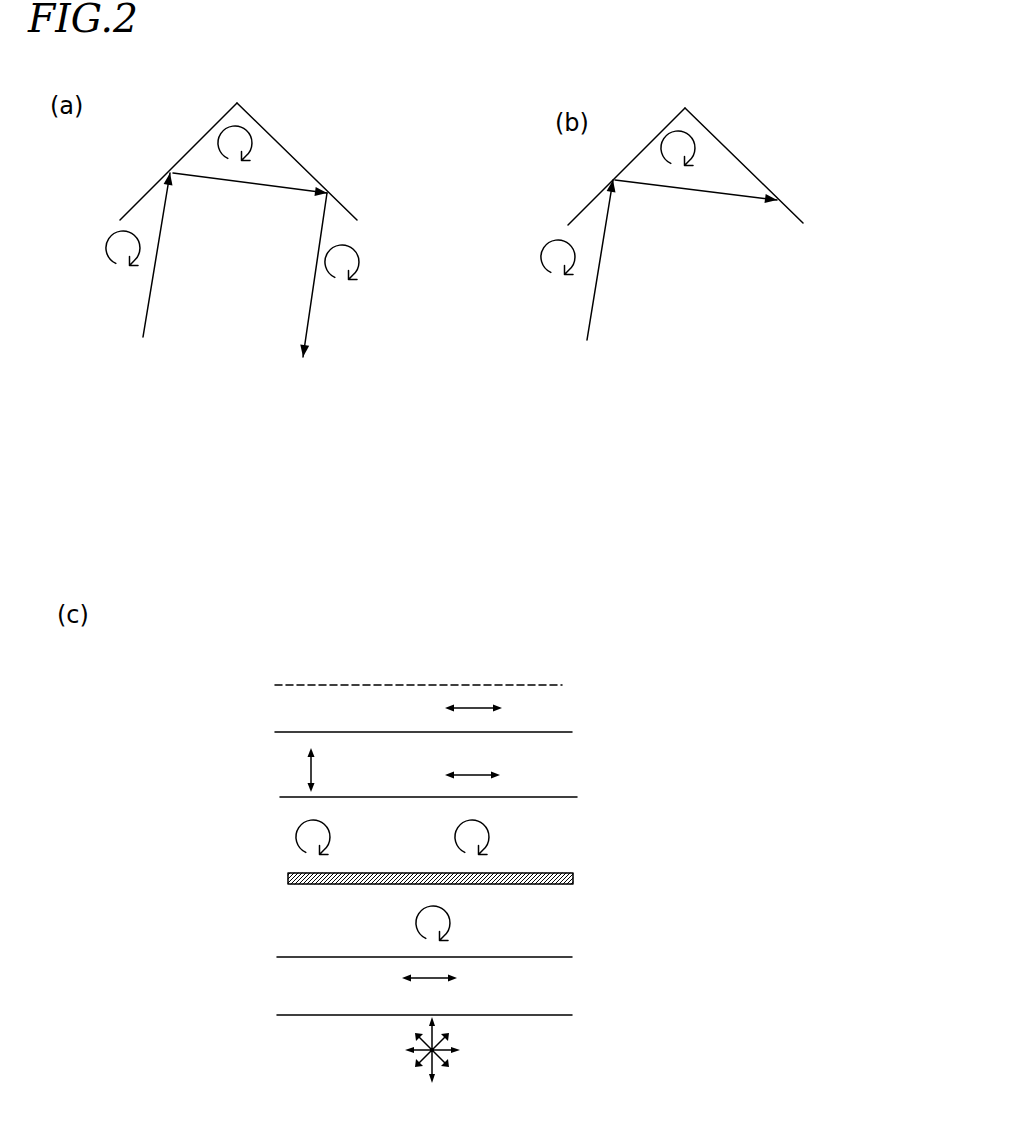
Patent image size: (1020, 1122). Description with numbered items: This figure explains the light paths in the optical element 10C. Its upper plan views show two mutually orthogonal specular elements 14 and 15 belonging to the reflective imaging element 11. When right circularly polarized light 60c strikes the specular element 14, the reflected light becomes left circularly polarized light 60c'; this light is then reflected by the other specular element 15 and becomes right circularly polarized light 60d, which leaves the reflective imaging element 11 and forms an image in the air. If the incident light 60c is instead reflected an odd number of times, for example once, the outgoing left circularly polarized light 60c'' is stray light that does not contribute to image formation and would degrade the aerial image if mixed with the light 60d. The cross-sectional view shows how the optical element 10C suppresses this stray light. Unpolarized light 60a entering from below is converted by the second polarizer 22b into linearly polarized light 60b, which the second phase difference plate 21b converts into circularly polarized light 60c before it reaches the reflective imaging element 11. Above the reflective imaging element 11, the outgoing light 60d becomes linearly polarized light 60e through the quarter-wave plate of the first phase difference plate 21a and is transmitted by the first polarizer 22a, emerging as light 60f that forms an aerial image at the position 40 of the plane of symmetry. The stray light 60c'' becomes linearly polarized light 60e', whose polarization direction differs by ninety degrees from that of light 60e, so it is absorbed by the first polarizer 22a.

The specular element 14 is at (137, 198).
The specular element 15 is at (330, 192).
The right circularly polarized light 60c is at (357, 557).
The left circularly polarized light 60c' is at (250, 161).
The left circularly polarized light 60c'' is at (536, 494).
The right circularly polarized light 60d is at (419, 524).
The linearly polarized light 60e is at (491, 766).
The linearly polarized light 60e' is at (338, 770).
The lateral vibration in upper layer 60f is at (492, 710).
The linearly polarized light 60b is at (452, 985).
The unpolarized light 60a is at (454, 1050).
The position of plane of symmetry 40 is at (562, 683).
The first polarizer 22a is at (562, 732).
The first phase difference plate 21a is at (557, 797).
The reflective imaging element 11 is at (573, 872).
The second phase difference plate 21b is at (565, 957).
The second polarizer 22b is at (572, 1013).
The optical element 10C is at (734, 789).